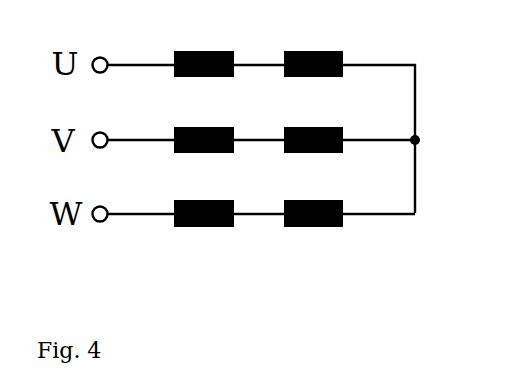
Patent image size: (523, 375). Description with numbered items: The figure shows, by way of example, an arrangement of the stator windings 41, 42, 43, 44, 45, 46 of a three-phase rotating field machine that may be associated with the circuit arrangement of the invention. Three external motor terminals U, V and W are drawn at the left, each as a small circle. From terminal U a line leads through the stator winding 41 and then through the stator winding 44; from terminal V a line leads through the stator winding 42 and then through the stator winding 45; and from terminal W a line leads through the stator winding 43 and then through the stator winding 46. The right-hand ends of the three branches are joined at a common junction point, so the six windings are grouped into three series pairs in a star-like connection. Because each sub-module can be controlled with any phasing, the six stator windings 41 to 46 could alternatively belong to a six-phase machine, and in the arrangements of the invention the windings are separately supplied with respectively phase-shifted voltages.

The stator winding 41 is at (204, 49).
The stator winding 42 is at (204, 124).
The stator winding 43 is at (204, 198).
The stator winding 44 is at (313, 49).
The stator winding 45 is at (313, 124).
The stator winding 46 is at (313, 198).